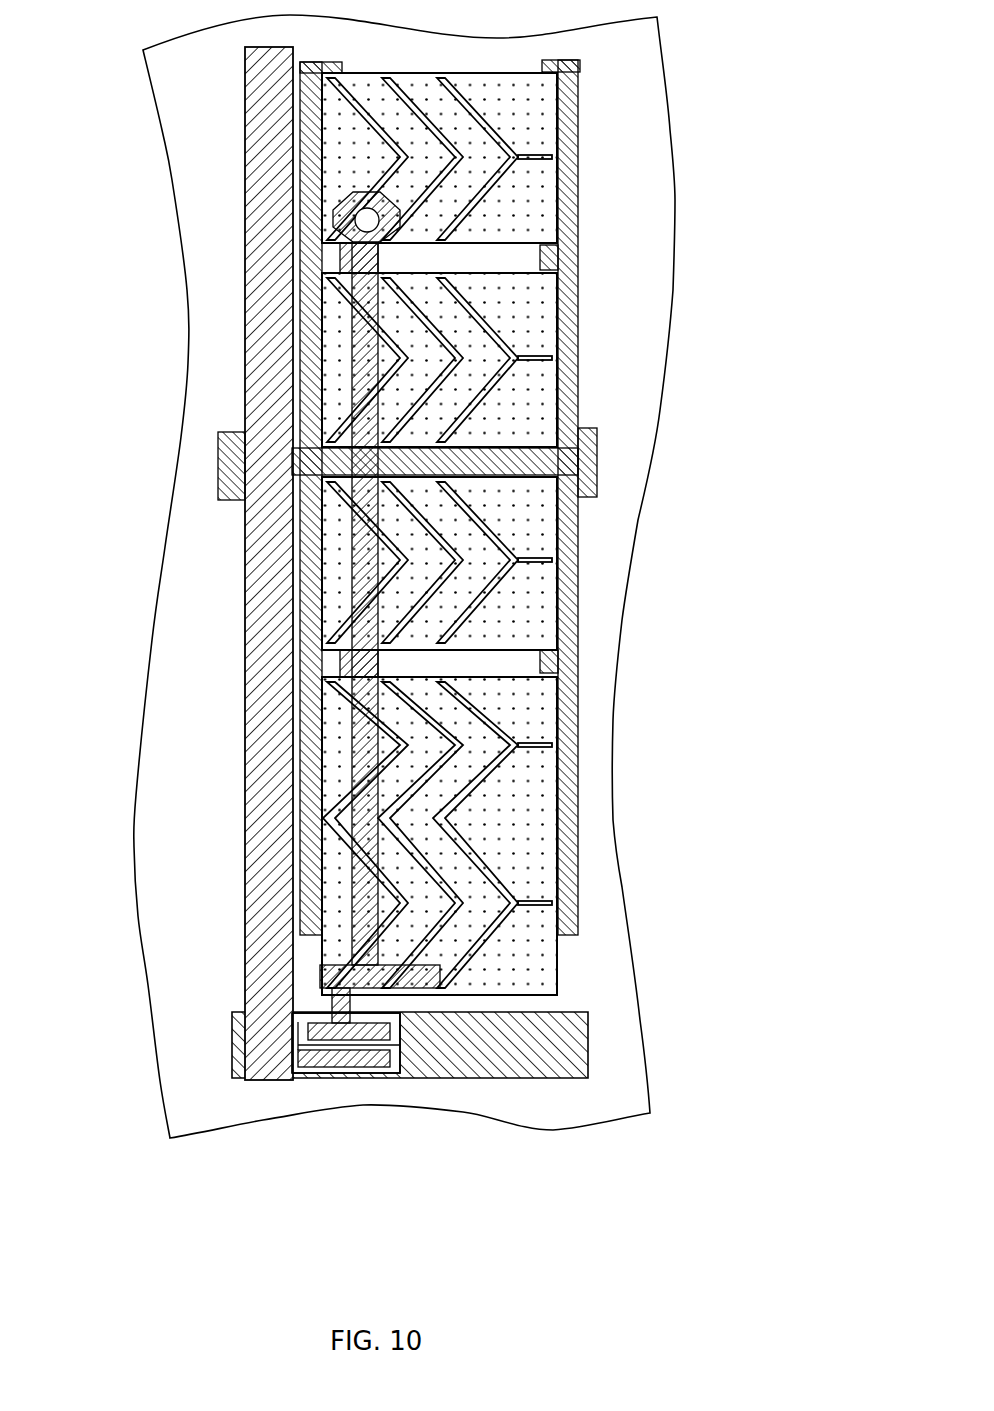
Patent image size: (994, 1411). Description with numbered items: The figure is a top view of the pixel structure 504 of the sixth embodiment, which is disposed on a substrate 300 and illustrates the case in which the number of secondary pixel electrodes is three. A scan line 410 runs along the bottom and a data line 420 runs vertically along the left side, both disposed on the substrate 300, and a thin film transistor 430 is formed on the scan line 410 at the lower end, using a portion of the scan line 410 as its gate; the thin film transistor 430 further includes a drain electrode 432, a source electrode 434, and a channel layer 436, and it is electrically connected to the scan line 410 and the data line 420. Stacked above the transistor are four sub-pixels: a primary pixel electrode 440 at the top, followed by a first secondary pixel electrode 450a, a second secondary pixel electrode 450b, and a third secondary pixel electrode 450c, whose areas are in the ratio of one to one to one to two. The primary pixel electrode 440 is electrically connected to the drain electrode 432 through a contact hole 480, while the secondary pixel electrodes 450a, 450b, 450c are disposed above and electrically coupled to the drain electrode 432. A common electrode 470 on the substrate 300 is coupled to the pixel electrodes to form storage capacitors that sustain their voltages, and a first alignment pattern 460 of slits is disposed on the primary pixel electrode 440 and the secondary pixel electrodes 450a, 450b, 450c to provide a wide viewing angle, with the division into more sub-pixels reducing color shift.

The substrate 300 is at (404, 605).
The scan line 410 is at (501, 1045).
The data line 420 is at (181, 563).
The thin film transistor 430 is at (467, 1208).
The drain electrode 432 is at (374, 723).
The source electrode 434 is at (331, 1112).
The channel layer 436 is at (383, 1108).
The primary pixel electrode 440 is at (546, 158).
The first secondary pixel electrode 450a is at (552, 360).
The second secondary pixel electrode 450b is at (552, 563).
The third secondary pixel electrode 450c is at (551, 836).
The first alignment pattern 460 is at (550, 533).
The common electrode 470 is at (494, 497).
The contact hole 480 is at (235, 219).
The pixel structure 504 is at (753, 1192).